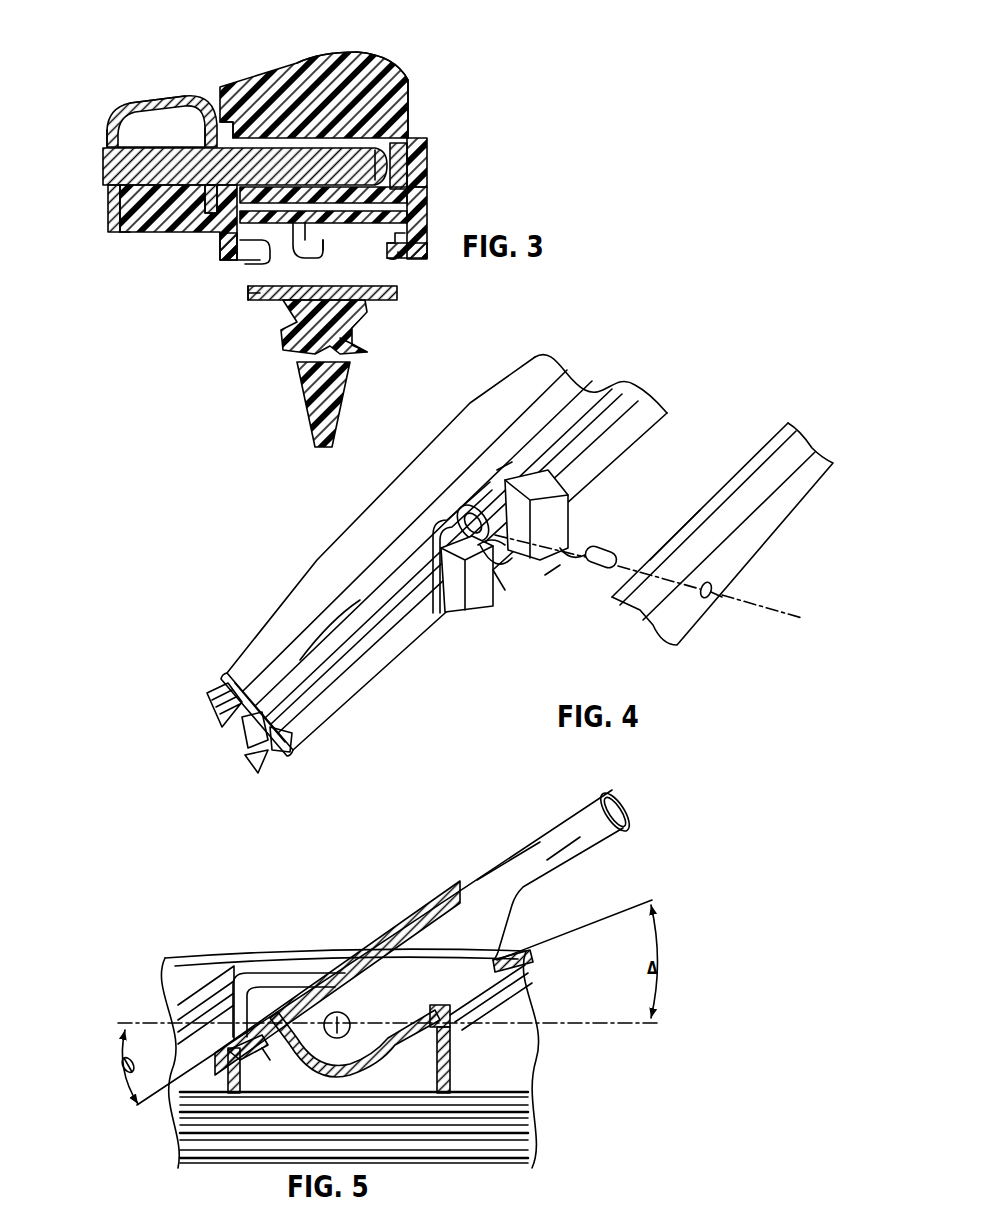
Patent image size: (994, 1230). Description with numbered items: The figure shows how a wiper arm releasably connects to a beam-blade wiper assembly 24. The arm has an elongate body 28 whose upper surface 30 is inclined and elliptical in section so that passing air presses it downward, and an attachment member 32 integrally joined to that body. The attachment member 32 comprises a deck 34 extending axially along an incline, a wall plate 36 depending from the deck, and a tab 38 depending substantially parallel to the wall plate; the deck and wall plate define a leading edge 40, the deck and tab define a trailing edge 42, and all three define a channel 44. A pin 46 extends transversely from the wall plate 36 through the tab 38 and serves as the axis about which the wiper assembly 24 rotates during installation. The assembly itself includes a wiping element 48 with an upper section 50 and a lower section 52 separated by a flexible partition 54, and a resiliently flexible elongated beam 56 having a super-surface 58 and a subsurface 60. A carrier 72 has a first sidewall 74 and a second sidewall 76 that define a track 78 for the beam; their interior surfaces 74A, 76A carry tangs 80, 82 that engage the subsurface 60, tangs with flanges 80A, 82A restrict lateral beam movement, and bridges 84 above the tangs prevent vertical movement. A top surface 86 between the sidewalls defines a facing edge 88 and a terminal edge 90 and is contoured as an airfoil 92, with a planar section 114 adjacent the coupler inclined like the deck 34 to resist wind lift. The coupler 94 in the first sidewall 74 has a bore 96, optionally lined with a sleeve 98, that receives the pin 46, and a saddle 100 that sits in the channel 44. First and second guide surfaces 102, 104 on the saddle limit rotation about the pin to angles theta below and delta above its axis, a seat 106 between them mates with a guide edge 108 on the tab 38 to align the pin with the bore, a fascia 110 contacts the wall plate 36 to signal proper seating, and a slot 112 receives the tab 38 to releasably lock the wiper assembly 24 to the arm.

In FIG. 3, the wiper assembly 24 is at (482, 68).
In FIG. 4, the wiper assembly 24 is at (165, 620).
In FIG. 5, the elongate body 28 is at (647, 818).
In FIG. 5, the upper surface 30 is at (583, 825).
In FIG. 3, the attachment member 32 is at (158, 57).
In FIG. 4, the attachment member 32 is at (743, 440).
In FIG. 5, the attachment member 32 is at (415, 897).
In FIG. 3, the deck 34 is at (150, 98).
In FIG. 4, the deck 34 is at (745, 507).
In FIG. 5, the deck 34 is at (400, 930).
In FIG. 3, the wall plate 36 is at (108, 210).
In FIG. 4, the wall plate 36 is at (740, 570).
In FIG. 3, the tab 38 is at (204, 128).
In FIG. 5, the tab 38 is at (490, 950).
In FIG. 3, the leading edge 40 is at (108, 146).
In FIG. 4, the leading edge 40 is at (677, 600).
In FIG. 3, the trailing edge 42 is at (216, 104).
In FIG. 4, the trailing edge 42 is at (680, 528).
In FIG. 3, the channel 44 is at (150, 132).
In FIG. 3, the pin 46 is at (103, 152).
In FIG. 4, the pin 46 is at (618, 560).
In FIG. 5, the pin 46 is at (337, 1012).
In FIG. 3, the wiping element 48 is at (267, 425).
In FIG. 4, the wiping element 48 is at (260, 768).
In FIG. 5, the wiping element 48 is at (547, 1135).
In FIG. 3, the upper section 50 is at (281, 313).
In FIG. 3, the lower section 52 is at (307, 400).
In FIG. 3, the partition 54 is at (297, 360).
In FIG. 3, the elongated beam 56 is at (232, 300).
In FIG. 3, the super-surface 58 is at (235, 298).
In FIG. 3, the subsurface 60 is at (252, 299).
In FIG. 3, the carrier 72 is at (462, 100).
In FIG. 4, the carrier 72 is at (273, 522).
In FIG. 5, the carrier 72 is at (138, 920).
In FIG. 4, the first sidewall 74 is at (353, 677).
In FIG. 3, the interior surface 74A is at (262, 247).
In FIG. 3, the second sidewall 76 is at (423, 202).
In FIG. 4, the second sidewall 76 is at (217, 683).
In FIG. 3, the interior surface 76A is at (390, 247).
In FIG. 3, the track 78 is at (318, 263).
In FIG. 3, the tang 80 is at (227, 253).
In FIG. 4, the tang 80 is at (217, 727).
In FIG. 3, the flange 80A is at (267, 255).
In FIG. 3, the tang 82 is at (423, 257).
In FIG. 4, the tang 82 is at (277, 747).
In FIG. 3, the flange 82A is at (388, 252).
In FIG. 3, the bridge 84 is at (322, 240).
In FIG. 4, the top surface 86 is at (260, 615).
In FIG. 3, the facing edge 88 is at (223, 85).
In FIG. 4, the facing edge 88 is at (300, 703).
In FIG. 3, the terminal edge 90 is at (407, 70).
In FIG. 4, the terminal edge 90 is at (230, 667).
In FIG. 4, the airfoil 92 is at (327, 637).
In FIG. 5, the airfoil 92 is at (180, 980).
In FIG. 3, the coupler 94 is at (421, 133).
In FIG. 4, the coupler 94 is at (440, 625).
In FIG. 5, the coupler 94 is at (248, 950).
In FIG. 3, the bore 96 is at (412, 162).
In FIG. 4, the bore 96 is at (505, 462).
In FIG. 3, the sleeve 98 is at (381, 162).
In FIG. 3, the saddle 100 is at (140, 240).
In FIG. 4, the saddle 100 is at (543, 577).
In FIG. 4, the first guide surface 102 is at (468, 577).
In FIG. 5, the first guide surface 102 is at (235, 1090).
In FIG. 4, the second guide surface 104 is at (543, 500).
In FIG. 5, the second guide surface 104 is at (442, 1090).
In FIG. 4, the seat 106 is at (575, 548).
In FIG. 5, the seat 106 is at (268, 1050).
In FIG. 5, the guide edge 108 is at (368, 1078).
In FIG. 3, the fascia 110 is at (121, 234).
In FIG. 4, the fascia 110 is at (500, 585).
In FIG. 3, the slot 112 is at (212, 86).
In FIG. 4, the slot 112 is at (510, 490).
In FIG. 3, the planar section 114 is at (297, 62).
In FIG. 4, the planar section 114 is at (417, 500).